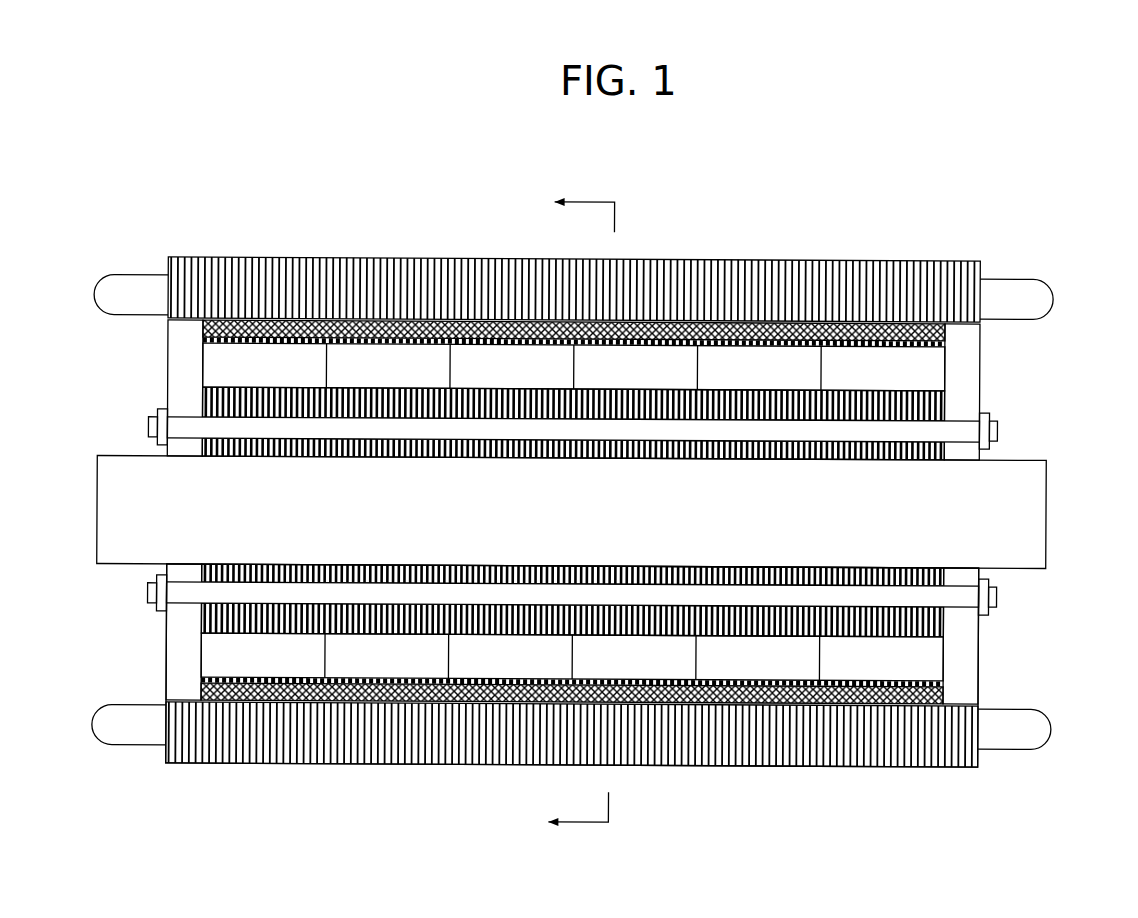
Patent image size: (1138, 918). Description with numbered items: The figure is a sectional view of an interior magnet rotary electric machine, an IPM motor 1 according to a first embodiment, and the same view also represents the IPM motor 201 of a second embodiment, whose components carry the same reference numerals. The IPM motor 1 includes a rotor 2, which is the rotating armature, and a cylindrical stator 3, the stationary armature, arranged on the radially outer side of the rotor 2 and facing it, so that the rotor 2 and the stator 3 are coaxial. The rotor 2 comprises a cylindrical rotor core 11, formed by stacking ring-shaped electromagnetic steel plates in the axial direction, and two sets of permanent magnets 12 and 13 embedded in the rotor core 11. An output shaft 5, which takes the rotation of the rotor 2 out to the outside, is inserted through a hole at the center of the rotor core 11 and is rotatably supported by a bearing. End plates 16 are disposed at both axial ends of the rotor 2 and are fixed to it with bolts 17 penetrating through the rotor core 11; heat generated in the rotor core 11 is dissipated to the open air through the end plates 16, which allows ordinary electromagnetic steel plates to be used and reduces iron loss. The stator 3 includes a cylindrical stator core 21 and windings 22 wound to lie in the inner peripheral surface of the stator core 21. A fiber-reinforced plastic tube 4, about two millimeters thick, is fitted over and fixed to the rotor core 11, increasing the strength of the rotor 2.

The IPM motor 1 is at (605, 478).
The IPM motor 201 is at (605, 478).
The rotor 2 is at (985, 657).
The stator 3 is at (980, 768).
The fiber-reinforced plastic tube 4 is at (333, 325).
The output shaft 5 is at (1040, 515).
The rotor core 11 is at (205, 622).
The permanent magnets 12 is at (773, 367).
The permanent magnets 13 is at (858, 662).
The end plates 16 is at (175, 363).
The bolts 17 is at (997, 430).
The stator core 21 is at (895, 273).
The windings 22 is at (1033, 287).